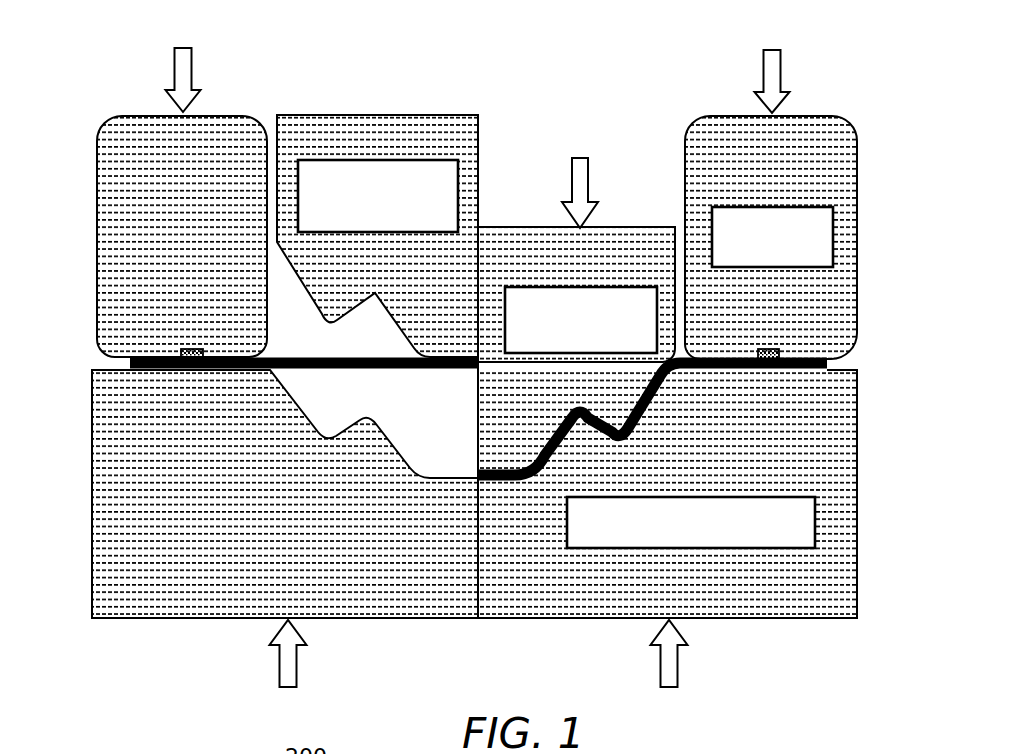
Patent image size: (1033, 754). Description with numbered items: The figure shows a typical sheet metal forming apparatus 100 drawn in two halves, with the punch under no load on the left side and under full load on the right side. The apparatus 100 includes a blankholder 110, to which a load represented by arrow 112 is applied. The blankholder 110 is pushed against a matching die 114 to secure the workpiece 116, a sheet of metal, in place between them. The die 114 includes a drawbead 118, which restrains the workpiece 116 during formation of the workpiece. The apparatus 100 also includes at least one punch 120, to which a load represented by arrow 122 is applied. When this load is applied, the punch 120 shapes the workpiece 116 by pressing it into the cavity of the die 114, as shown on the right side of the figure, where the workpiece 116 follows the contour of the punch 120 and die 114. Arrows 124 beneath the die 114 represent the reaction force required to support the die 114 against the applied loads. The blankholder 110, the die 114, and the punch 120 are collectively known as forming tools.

The sheet metal forming apparatus 100 is at (498, 90).
The blankholder 110 is at (97, 241).
The arrow 112 is at (192, 70).
The die 114 is at (222, 618).
The workpiece 116 is at (414, 372).
The drawbead 118 is at (772, 372).
The punch 120 is at (373, 114).
The arrow 122 is at (590, 172).
The arrows 124 is at (297, 662).